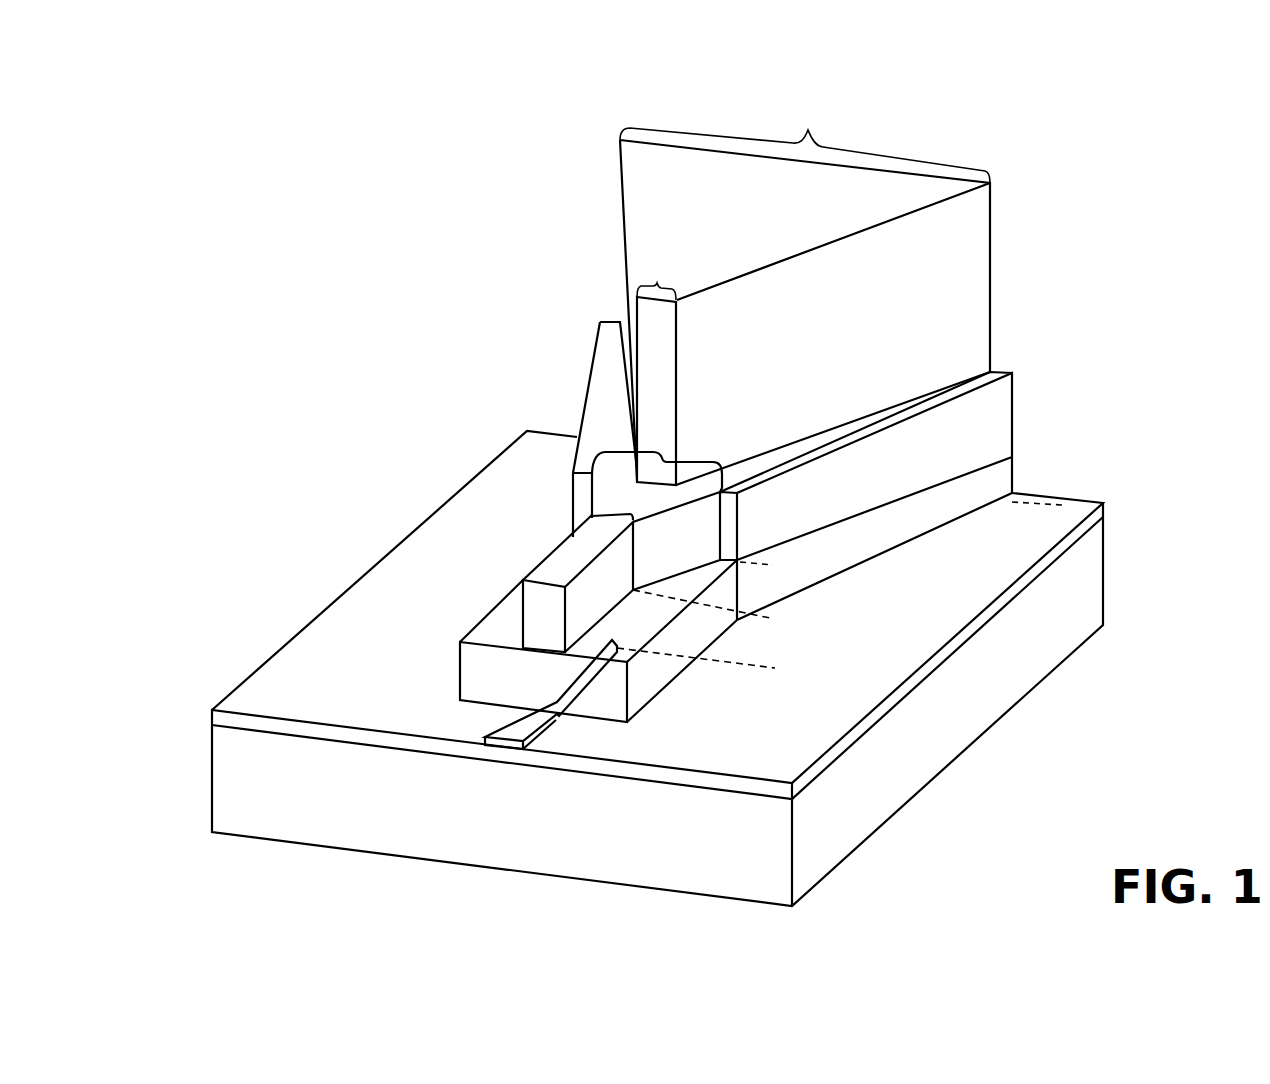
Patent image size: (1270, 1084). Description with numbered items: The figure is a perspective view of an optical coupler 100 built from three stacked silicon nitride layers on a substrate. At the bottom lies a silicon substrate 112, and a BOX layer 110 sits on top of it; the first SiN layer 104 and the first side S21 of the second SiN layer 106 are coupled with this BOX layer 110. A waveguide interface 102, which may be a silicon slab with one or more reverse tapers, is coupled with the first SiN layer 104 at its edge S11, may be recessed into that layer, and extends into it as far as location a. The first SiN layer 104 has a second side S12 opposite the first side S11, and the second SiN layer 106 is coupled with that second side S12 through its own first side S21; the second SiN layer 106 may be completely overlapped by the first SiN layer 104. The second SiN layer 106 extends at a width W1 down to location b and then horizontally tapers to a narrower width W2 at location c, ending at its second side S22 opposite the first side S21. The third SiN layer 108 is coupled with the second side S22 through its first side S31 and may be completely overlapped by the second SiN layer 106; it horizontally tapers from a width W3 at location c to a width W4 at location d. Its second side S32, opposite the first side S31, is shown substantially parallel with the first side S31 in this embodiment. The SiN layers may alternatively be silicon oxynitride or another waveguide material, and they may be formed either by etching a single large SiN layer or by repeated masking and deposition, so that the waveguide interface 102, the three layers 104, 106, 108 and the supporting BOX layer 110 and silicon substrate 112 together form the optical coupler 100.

The optical coupler 100 is at (1158, 121).
The waveguide interface 102 is at (523, 722).
The first silicon nitride layer 104 is at (471, 668).
The second silicon nitride layer 106 is at (538, 600).
The third silicon nitride layer 108 is at (627, 280).
The BOX layer 110 is at (254, 692).
The silicon substrate 112 is at (231, 782).
The width w1 W1 is at (617, 508).
The width w2 W2 is at (662, 452).
The width w3 W3 is at (660, 287).
The width w4 W4 is at (805, 142).
The first side of first SiN layer S11 is at (1000, 496).
The second side of first SiN layer S12 is at (1003, 458).
The first side of second SiN layer S21 is at (972, 458).
The second side of second SiN layer S22 is at (980, 390).
The first side of third SiN layer S31 is at (947, 384).
The second side of third SiN layer S32 is at (943, 189).
The location a is at (645, 652).
The location b is at (760, 597).
The location c is at (773, 565).
The location d is at (1062, 505).